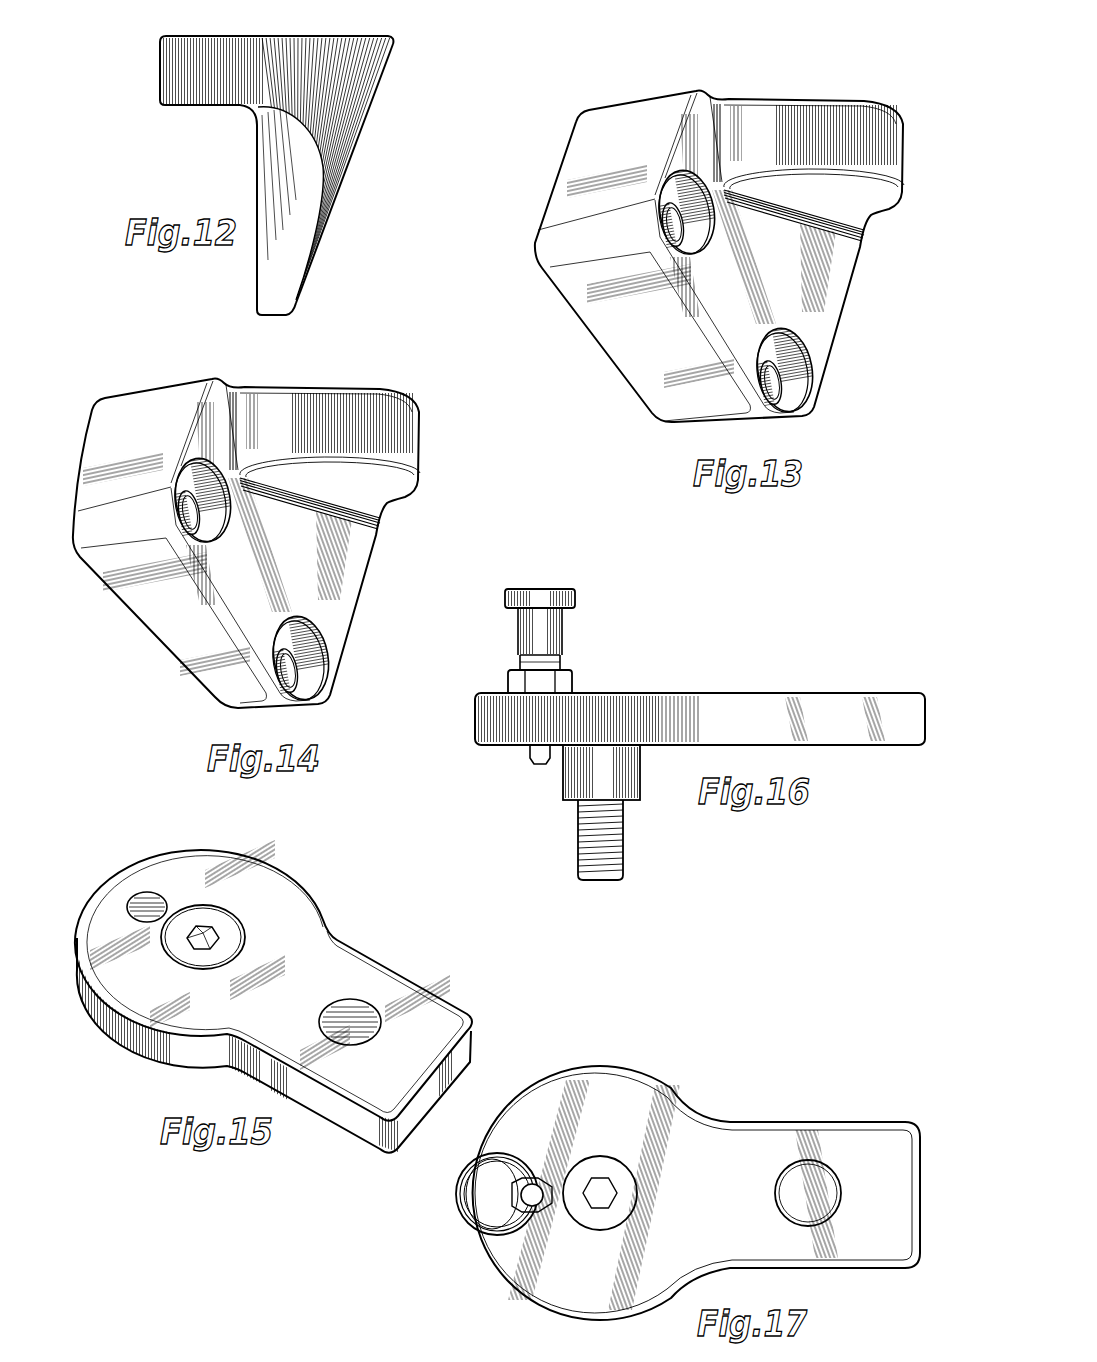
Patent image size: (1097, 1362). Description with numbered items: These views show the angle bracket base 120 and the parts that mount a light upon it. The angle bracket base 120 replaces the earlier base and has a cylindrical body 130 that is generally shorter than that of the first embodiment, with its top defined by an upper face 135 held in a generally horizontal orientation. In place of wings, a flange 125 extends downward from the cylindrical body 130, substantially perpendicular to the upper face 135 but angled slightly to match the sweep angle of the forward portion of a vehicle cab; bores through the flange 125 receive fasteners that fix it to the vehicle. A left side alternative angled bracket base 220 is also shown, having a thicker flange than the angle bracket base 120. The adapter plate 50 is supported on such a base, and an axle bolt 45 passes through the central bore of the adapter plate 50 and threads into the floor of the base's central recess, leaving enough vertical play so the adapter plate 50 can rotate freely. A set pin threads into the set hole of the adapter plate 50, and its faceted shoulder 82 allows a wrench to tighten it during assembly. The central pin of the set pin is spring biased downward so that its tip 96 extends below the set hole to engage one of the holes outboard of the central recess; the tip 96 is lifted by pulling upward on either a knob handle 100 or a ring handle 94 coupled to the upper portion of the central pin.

In FIG. 12, the angle bracket base 120 is at (269, 159).
In FIG. 14, the angle bracket base 120 is at (386, 534).
In FIG. 12, the flange 125 is at (268, 183).
In FIG. 12, the cylindrical body 130 is at (236, 54).
In FIG. 12, the upper face 135 is at (287, 35).
In FIG. 13, the angled bracket base 220 is at (576, 330).
In FIG. 16, the adapter plate 50 is at (755, 688).
In FIG. 15, the adapter plate 50 is at (273, 880).
In FIG. 17, the adapter plate 50 is at (646, 1159).
In FIG. 16, the knob handle 100 is at (577, 600).
In FIG. 16, the faceted shoulder 82 is at (572, 684).
In FIG. 16, the tip 96 is at (528, 752).
In FIG. 16, the axle bolt 45 is at (624, 857).
In FIG. 17, the ring handle 94 is at (457, 1190).